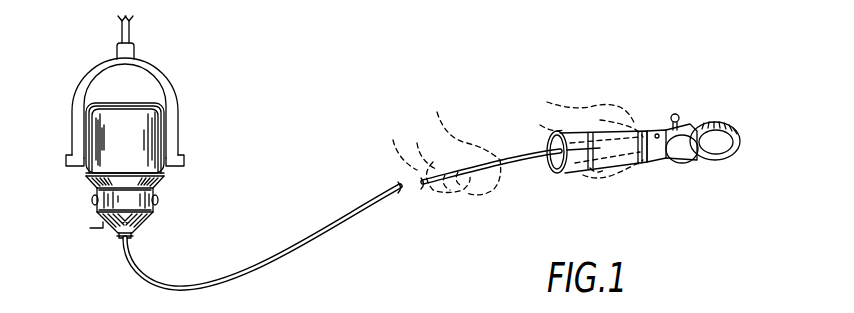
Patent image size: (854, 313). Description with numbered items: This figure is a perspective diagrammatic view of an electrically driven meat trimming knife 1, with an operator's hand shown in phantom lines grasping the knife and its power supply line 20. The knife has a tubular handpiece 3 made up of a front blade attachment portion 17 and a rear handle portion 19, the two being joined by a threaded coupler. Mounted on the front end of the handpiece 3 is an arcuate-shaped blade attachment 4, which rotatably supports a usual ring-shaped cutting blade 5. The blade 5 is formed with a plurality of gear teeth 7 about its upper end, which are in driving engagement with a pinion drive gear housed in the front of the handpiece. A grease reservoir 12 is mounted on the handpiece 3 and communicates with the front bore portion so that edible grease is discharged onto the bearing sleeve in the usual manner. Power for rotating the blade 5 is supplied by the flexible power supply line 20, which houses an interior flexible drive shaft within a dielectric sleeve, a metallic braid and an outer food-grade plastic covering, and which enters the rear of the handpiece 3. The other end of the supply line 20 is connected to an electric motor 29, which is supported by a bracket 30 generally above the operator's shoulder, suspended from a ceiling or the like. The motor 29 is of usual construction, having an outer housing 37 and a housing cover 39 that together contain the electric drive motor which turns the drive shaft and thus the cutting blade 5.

The electrically driven meat trimming knife 1 is at (655, 172).
The tubular handpiece 3 is at (570, 175).
The arcuate-shaped blade attachment 4 is at (693, 131).
The ring-shaped cutting blade 5 is at (720, 162).
The gear teeth 7 is at (727, 122).
The grease reservoir 12 is at (672, 120).
The front blade attachment portion 17 is at (653, 148).
The rear handle portion 19 is at (575, 152).
The power supply line 20 is at (325, 237).
The electric motor 29 is at (130, 137).
The bracket 30 is at (153, 62).
The outer housing 37 is at (158, 178).
The housing cover 39 is at (102, 134).